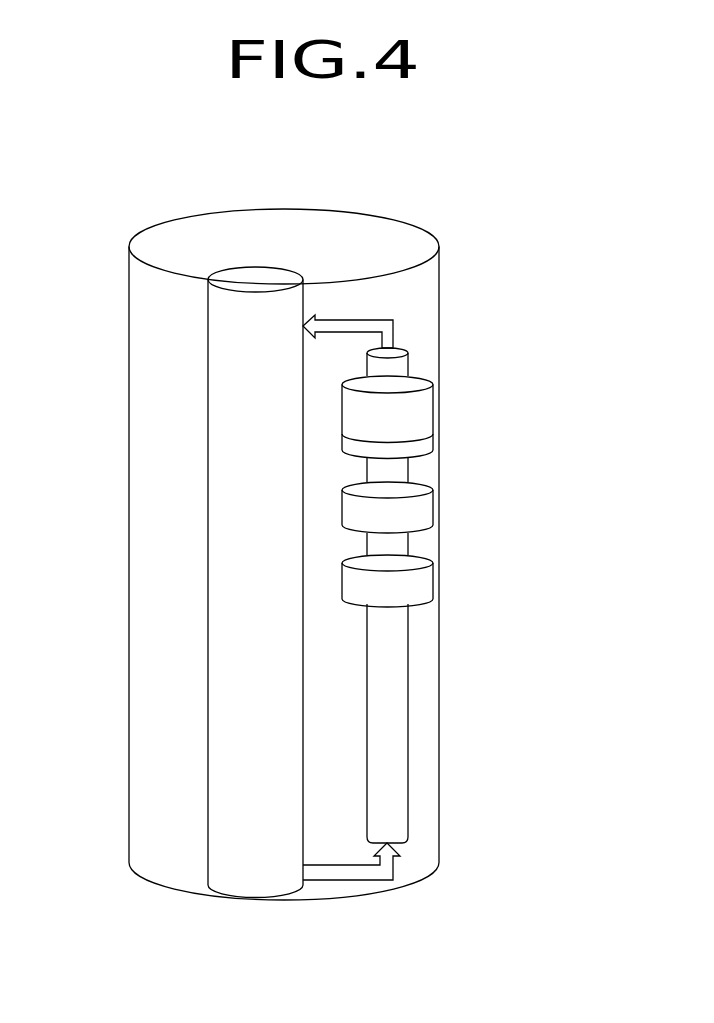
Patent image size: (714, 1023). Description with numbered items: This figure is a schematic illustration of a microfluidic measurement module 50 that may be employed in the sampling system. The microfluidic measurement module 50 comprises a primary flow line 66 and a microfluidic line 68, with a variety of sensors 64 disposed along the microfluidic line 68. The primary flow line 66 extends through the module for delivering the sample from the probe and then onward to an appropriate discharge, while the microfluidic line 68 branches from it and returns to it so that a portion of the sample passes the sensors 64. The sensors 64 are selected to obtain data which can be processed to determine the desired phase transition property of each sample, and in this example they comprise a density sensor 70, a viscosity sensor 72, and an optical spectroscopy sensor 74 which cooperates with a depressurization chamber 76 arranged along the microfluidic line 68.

The microfluidic measurement module 50 is at (447, 247).
The primary flow line 66 is at (207, 718).
The depressurization chamber 76 is at (418, 415).
The optical spectroscopy sensor 74 is at (418, 447).
The viscosity sensor 72 is at (418, 513).
The density sensor 70 is at (418, 587).
The sensors 64 is at (427, 458).
The microfluidic line 68 is at (402, 763).